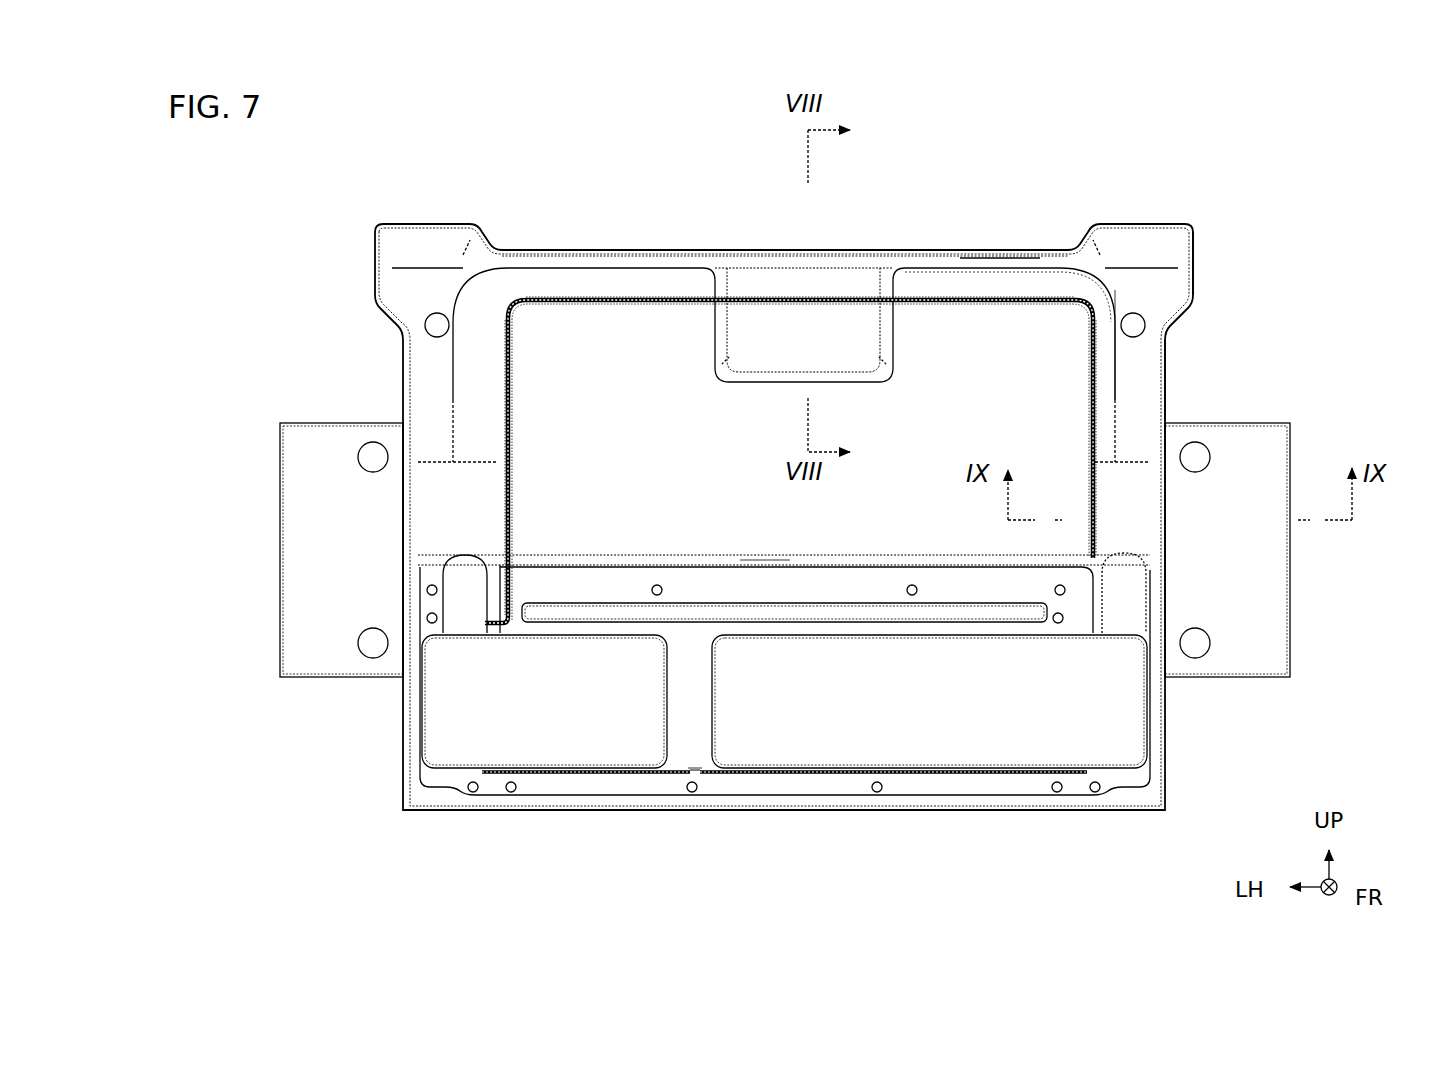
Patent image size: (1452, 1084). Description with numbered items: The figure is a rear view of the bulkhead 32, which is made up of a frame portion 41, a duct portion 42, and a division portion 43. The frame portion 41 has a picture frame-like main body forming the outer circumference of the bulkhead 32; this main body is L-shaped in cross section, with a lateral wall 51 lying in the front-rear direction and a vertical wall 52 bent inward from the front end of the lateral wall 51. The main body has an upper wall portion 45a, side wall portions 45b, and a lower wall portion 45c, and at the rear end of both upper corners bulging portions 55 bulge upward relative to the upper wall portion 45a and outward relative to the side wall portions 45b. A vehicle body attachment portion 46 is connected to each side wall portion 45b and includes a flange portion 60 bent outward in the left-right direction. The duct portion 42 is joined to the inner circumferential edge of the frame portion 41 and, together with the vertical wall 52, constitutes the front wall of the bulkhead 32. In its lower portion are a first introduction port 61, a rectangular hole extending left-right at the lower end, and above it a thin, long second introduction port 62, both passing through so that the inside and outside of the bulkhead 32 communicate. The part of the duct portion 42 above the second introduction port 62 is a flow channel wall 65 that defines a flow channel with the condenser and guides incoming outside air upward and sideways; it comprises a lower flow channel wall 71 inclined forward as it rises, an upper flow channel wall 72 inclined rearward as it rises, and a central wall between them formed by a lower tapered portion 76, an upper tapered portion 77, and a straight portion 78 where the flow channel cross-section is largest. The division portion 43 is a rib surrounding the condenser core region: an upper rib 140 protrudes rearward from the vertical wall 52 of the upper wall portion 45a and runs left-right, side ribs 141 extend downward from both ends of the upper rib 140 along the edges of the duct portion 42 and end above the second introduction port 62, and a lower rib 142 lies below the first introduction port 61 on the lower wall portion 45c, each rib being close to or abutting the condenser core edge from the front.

The bulkhead 32 is at (1247, 240).
The frame portion 41 is at (808, 250).
The upper wall portion 45a is at (980, 250).
The side wall portion 45b is at (1168, 375).
The lower wall portion 45c is at (888, 815).
The duct portion 42 is at (555, 372).
The flow channel wall 65 is at (800, 462).
The division portion 43 is at (1098, 440).
The vehicle body attachment portion 46 is at (275, 477).
The lateral wall 51 is at (622, 250).
The vertical wall 52 is at (680, 285).
The bulging portion 55 is at (1128, 224).
The flange portion 60 is at (305, 578).
The first introduction port 61 is at (425, 715).
The second introduction port 62 is at (1005, 610).
The lower flow channel wall 71 is at (1030, 585).
The upper flow channel wall 72 is at (953, 322).
The lower tapered portion 76 is at (758, 563).
The upper tapered portion 77 is at (797, 375).
The straight portion 78 is at (720, 477).
The upper rib 140 is at (752, 298).
The side rib 141 is at (505, 408).
The lower rib 142 is at (588, 776).